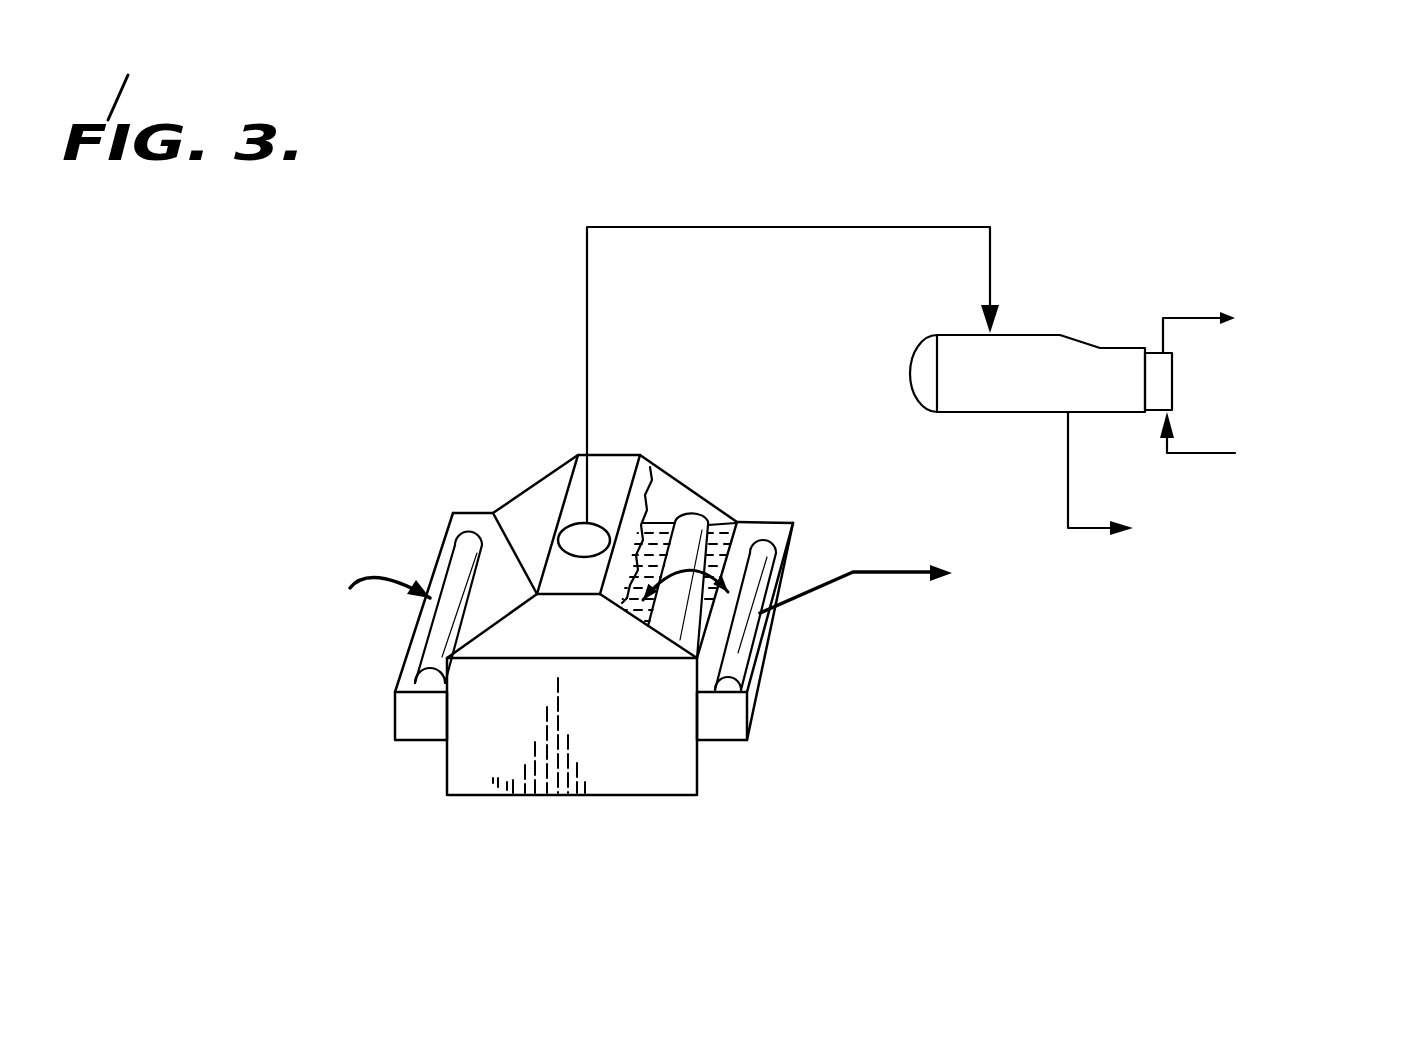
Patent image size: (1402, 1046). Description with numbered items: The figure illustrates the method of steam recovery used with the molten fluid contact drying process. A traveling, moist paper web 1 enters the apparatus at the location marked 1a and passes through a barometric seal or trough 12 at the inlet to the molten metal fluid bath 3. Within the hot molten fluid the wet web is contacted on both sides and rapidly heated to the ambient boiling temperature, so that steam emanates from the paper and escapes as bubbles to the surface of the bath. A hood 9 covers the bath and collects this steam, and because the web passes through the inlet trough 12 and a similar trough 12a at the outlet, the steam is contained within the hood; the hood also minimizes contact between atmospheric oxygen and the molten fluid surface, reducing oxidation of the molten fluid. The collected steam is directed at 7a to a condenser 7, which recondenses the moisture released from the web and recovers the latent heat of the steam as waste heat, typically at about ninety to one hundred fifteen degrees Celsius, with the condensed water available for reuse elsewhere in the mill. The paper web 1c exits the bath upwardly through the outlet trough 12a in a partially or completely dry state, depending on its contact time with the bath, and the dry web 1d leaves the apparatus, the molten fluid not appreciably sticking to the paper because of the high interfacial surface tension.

The paper web 1 is at (271, 646).
The wet paper web entering drying unit 1a is at (378, 578).
The exiting paper web 1c is at (875, 572).
The dry web 1d is at (994, 588).
The molten metal fluid bath 3 is at (650, 523).
The condenser 7 is at (1045, 322).
The steam outlet to condenser 7a is at (587, 273).
The hood 9 is at (528, 497).
The barometric seal or trough 12 is at (410, 720).
The outlet trough 12a is at (728, 725).